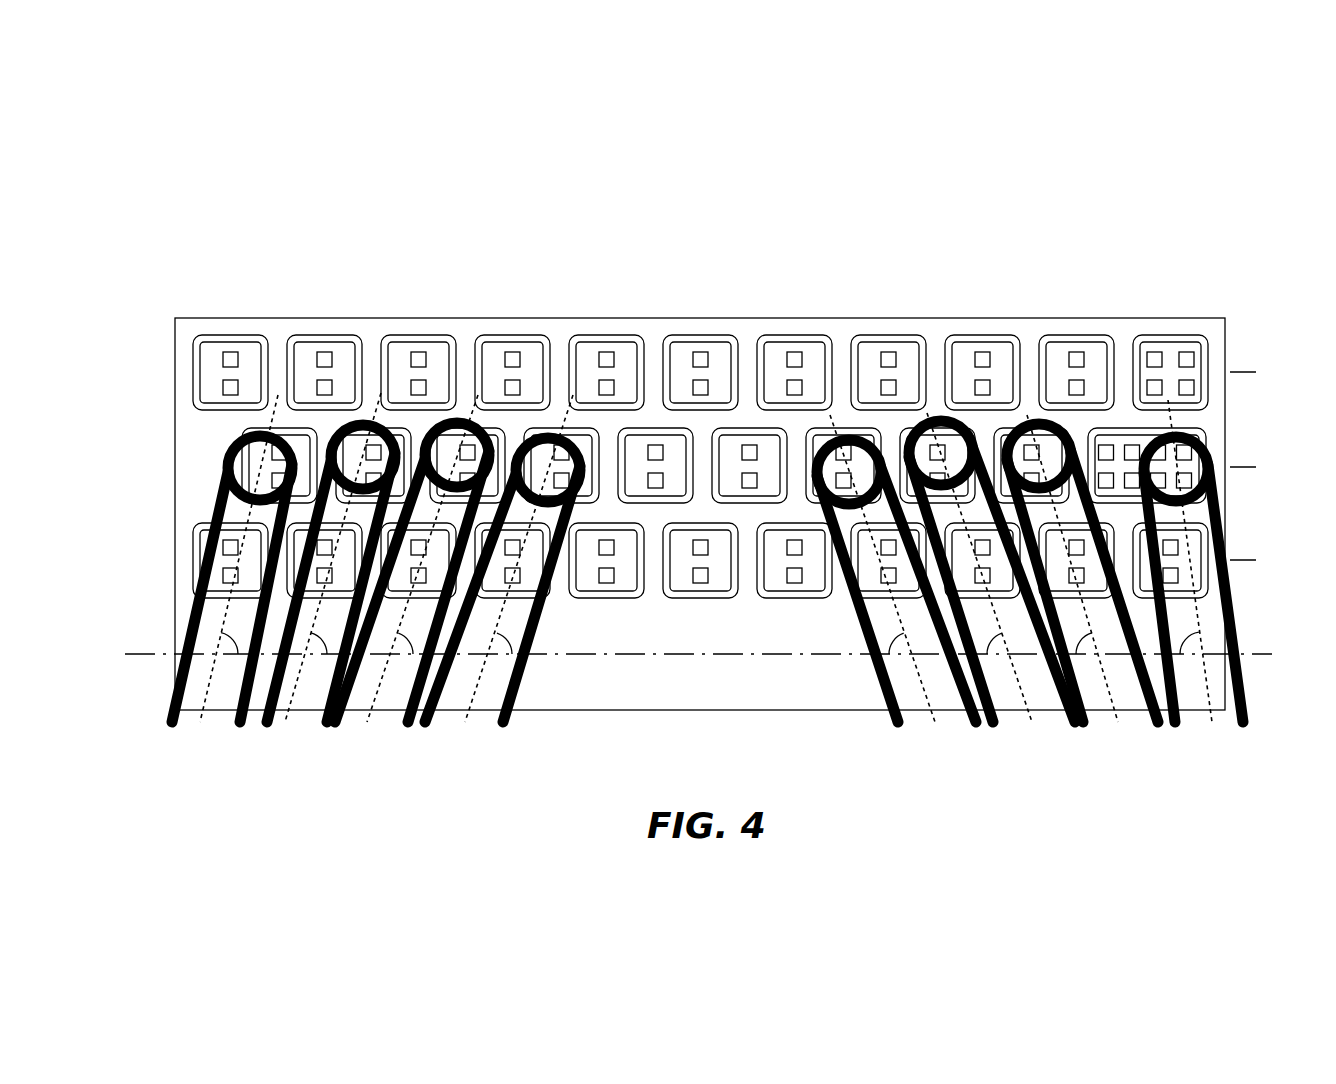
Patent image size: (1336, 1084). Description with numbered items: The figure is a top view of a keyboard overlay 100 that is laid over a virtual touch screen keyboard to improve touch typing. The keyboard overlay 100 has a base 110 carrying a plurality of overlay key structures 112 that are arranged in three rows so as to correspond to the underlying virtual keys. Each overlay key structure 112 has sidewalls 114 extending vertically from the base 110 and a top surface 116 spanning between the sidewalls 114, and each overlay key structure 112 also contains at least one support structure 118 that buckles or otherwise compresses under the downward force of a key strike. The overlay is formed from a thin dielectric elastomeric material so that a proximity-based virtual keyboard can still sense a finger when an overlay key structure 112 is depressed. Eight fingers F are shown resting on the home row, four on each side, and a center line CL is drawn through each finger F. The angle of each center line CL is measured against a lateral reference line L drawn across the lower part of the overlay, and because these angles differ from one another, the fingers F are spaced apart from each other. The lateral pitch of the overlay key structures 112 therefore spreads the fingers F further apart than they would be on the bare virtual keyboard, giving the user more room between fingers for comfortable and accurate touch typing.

The keyboard overlay 100 is at (1186, 187).
The base 110 is at (843, 332).
The overlay key structure 112 is at (402, 354).
The sidewall 114 is at (593, 338).
The top surface 116 is at (683, 356).
The support structure 118 is at (507, 387).
The center line CL is at (830, 415).
The finger F is at (1017, 426).
The reference line L is at (699, 655).